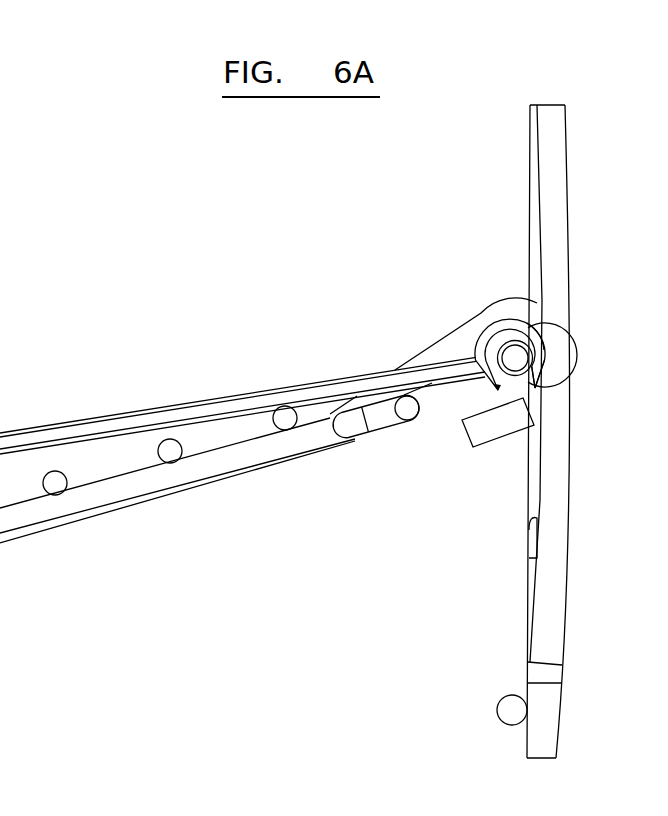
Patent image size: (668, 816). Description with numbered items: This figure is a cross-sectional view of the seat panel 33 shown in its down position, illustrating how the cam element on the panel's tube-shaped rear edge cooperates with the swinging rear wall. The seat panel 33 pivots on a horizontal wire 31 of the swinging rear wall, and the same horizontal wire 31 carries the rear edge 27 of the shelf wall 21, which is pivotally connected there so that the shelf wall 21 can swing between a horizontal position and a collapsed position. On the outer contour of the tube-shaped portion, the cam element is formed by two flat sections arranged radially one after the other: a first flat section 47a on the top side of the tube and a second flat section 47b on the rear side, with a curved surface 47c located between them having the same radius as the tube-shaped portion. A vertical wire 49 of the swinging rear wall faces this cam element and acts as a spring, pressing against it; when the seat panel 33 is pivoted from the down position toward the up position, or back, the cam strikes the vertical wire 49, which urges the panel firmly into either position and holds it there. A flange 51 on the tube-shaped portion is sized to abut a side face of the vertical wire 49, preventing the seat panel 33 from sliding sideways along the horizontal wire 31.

The shelf wall 21 is at (68, 530).
The rear edge 27 is at (578, 356).
The horizontal wire 31 is at (514, 365).
The seat panel 33 is at (90, 416).
The first flat section 47a is at (509, 334).
The second flat section 47b is at (540, 388).
The curved surface 47c is at (538, 334).
The vertical wire 49 is at (557, 138).
The flange 51 is at (490, 316).